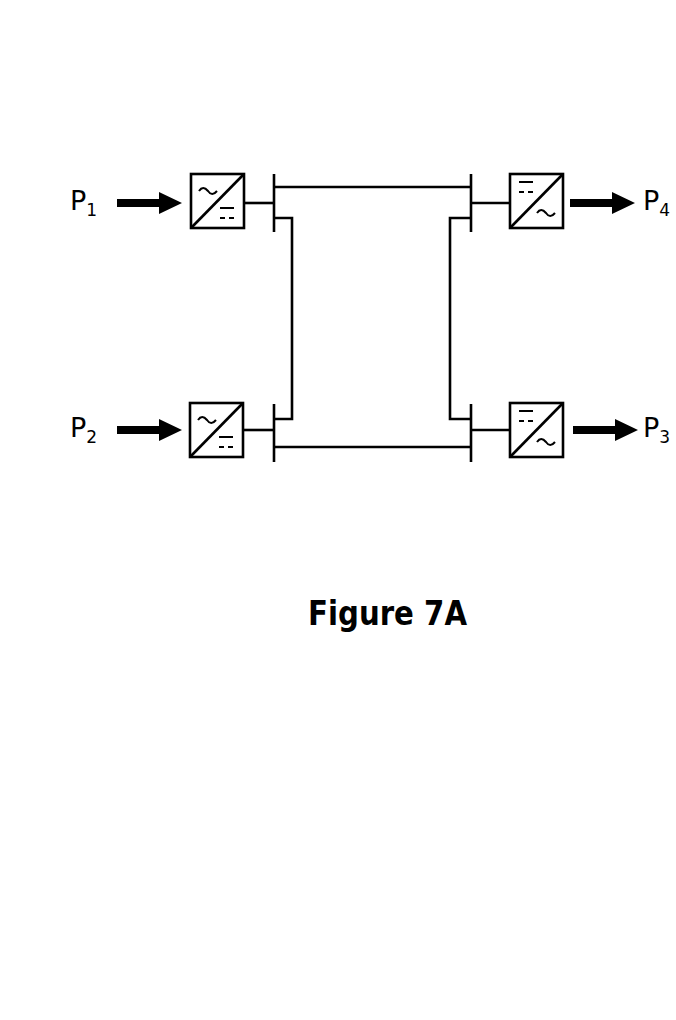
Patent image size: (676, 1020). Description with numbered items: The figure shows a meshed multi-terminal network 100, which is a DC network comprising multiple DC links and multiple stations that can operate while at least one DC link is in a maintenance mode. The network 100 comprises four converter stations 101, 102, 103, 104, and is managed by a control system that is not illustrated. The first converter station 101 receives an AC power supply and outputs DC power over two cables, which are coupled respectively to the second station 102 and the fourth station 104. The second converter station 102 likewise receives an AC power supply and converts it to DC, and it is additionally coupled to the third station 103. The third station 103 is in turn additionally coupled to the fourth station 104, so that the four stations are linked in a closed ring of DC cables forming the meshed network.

The meshed multi-terminal network 100 is at (392, 333).
The first converter station 101 is at (205, 172).
The second converter station 102 is at (205, 401).
The third converter station 103 is at (537, 401).
The fourth converter station 104 is at (530, 172).